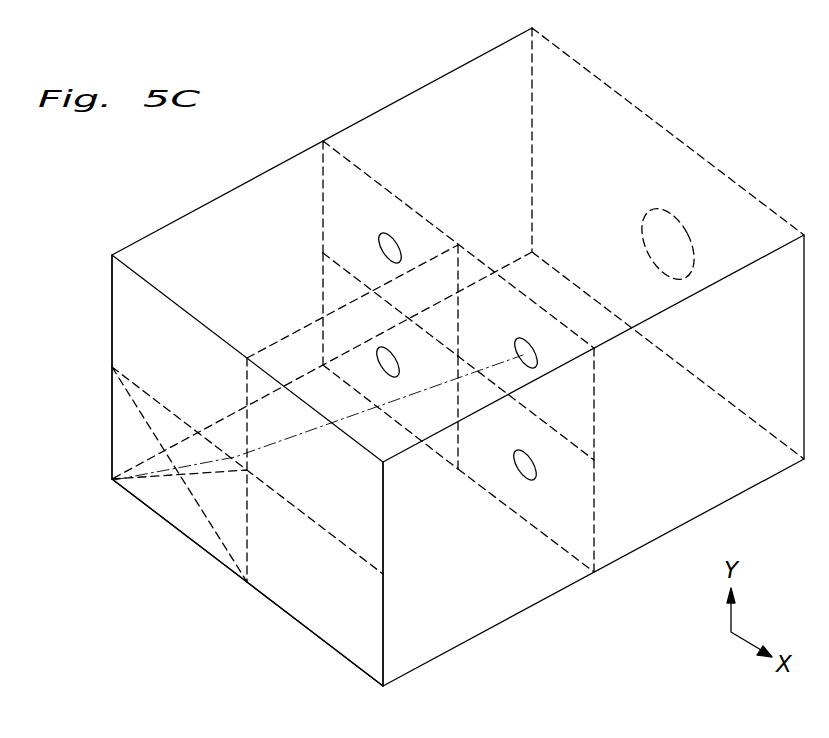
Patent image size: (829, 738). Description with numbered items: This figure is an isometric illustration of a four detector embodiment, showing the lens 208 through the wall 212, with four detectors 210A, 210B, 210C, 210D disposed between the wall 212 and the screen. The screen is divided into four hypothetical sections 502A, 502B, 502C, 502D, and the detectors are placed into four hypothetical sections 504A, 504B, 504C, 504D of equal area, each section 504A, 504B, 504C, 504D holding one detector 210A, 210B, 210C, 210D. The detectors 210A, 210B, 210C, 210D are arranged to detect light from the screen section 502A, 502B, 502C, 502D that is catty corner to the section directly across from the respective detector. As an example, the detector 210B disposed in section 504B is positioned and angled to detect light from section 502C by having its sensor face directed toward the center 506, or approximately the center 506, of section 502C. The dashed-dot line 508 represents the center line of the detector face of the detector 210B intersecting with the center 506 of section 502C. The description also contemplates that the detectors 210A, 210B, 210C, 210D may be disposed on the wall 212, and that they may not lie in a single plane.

The wall 212 is at (630, 102).
The lens 208 is at (655, 219).
The detector 210A is at (397, 236).
The detector 210B is at (525, 340).
The detector 210C is at (383, 352).
The detector 210D is at (530, 480).
The section 502A is at (112, 304).
The section 502B is at (383, 504).
The section 502C is at (188, 520).
The section 502D is at (297, 602).
The section 504A is at (343, 178).
The section 504B is at (500, 300).
The section 504C is at (343, 292).
The section 504D is at (557, 523).
The center 506 is at (178, 480).
The dashed-dot line 508 is at (270, 446).